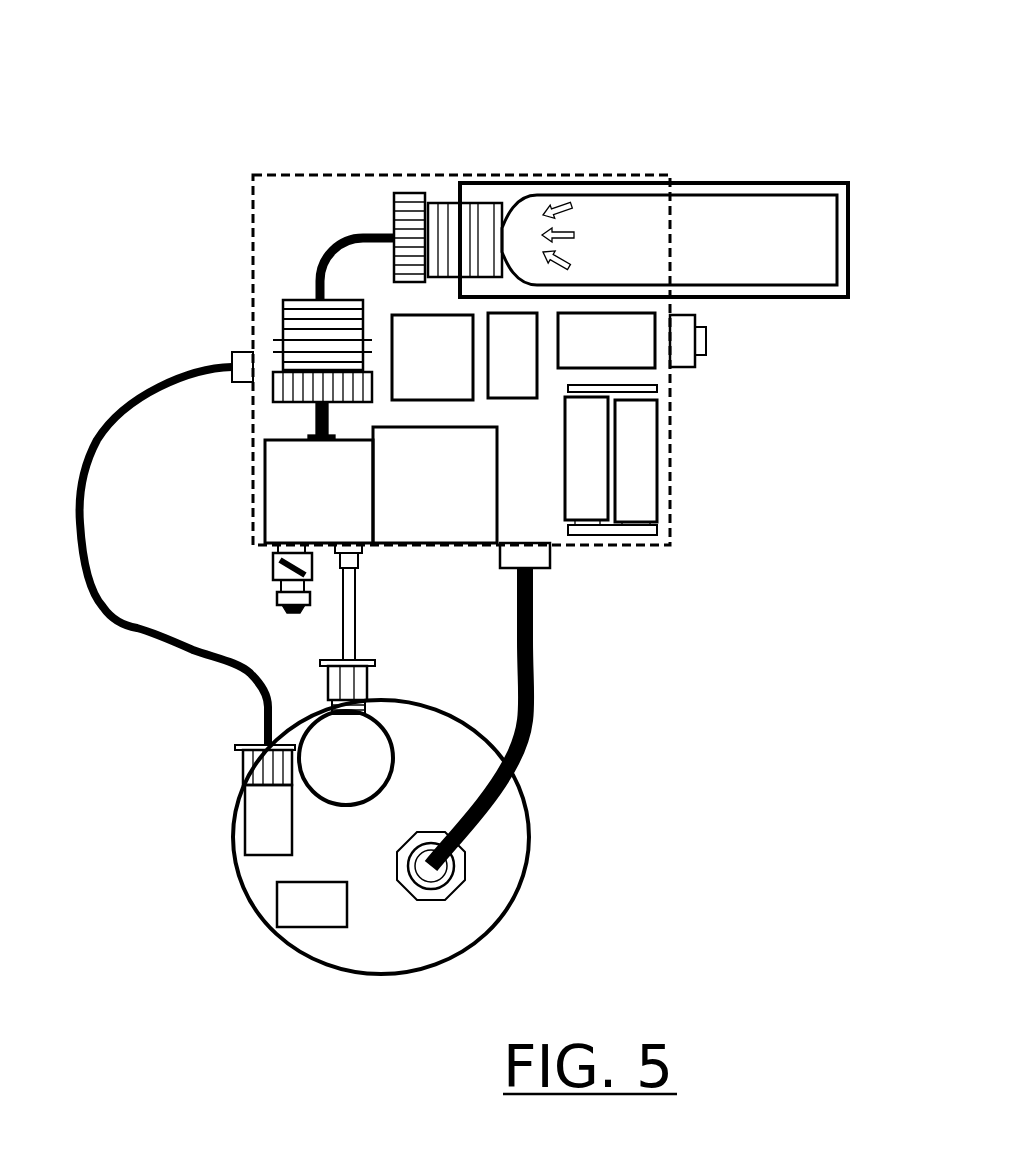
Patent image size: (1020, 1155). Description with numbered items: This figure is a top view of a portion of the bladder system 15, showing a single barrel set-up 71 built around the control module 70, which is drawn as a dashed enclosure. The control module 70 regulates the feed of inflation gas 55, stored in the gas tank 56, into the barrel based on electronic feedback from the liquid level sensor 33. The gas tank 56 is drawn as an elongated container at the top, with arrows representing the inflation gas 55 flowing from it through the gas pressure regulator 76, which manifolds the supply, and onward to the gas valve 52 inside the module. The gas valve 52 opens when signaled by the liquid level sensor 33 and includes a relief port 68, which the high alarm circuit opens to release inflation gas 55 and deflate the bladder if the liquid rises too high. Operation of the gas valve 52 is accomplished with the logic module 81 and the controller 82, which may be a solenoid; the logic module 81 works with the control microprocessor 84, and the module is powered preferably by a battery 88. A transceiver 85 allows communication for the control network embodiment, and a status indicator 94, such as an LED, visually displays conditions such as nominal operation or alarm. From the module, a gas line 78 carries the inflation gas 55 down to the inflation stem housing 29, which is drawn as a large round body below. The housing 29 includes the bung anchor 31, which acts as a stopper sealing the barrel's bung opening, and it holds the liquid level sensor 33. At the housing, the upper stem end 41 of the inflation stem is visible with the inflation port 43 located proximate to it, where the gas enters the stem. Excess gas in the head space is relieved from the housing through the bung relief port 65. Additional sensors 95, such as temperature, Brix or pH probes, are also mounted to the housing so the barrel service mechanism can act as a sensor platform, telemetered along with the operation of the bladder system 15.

The bladder system 15 is at (172, 335).
The inflation stem housing 29 is at (215, 872).
The bung anchor 31 is at (515, 777).
The liquid level sensor 33 is at (480, 856).
The upper stem end 41 is at (335, 745).
The inflation port 43 is at (372, 703).
The gas valve 52 is at (278, 490).
The inflation gas 55 is at (554, 217).
The gas tank 56 is at (750, 270).
The bung relief port 65 is at (288, 915).
The relief port 68 is at (275, 585).
The control module 70 is at (322, 172).
The single barrel set-up 71 is at (400, 102).
The gas pressure regulator 76 is at (345, 240).
The gas line 78 is at (315, 428).
The logic module 81 is at (507, 388).
The controller 82 is at (410, 513).
The control microprocessor 84 is at (413, 335).
The transceiver 85 is at (642, 353).
The battery 88 is at (637, 440).
The status indicator 94 is at (682, 345).
The additional sensors 95 is at (240, 745).